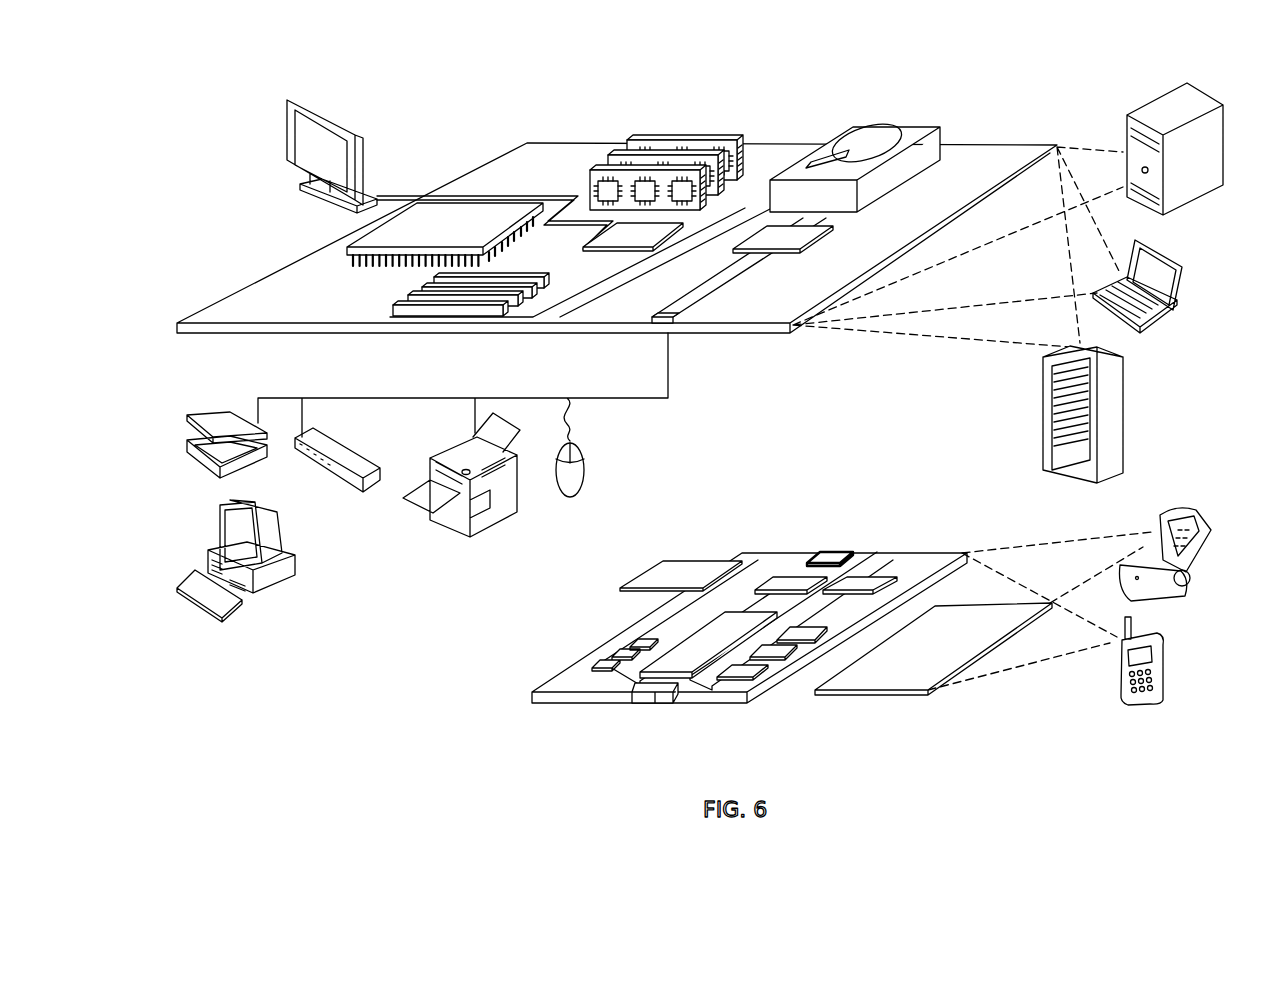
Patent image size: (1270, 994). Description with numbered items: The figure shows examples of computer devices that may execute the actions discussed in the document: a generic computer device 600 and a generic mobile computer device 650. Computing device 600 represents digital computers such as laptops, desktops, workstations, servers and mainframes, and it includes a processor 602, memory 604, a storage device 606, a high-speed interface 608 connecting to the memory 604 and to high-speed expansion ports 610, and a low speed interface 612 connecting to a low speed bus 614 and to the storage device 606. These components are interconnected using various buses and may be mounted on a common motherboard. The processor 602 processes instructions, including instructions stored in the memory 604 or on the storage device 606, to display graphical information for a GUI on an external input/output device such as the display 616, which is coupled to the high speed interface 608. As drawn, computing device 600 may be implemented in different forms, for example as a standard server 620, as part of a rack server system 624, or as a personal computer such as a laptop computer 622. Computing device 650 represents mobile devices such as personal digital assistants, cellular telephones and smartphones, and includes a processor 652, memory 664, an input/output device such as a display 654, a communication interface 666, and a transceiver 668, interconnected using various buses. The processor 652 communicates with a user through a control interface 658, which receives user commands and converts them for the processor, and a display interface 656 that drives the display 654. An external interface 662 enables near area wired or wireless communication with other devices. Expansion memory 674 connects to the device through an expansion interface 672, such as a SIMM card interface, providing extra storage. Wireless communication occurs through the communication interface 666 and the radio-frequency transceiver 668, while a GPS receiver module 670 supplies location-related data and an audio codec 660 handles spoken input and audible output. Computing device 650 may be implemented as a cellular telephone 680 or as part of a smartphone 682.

The computing device 600 is at (456, 121).
The processor 602 is at (318, 252).
The memory 604 is at (640, 140).
The storage device 606 is at (852, 126).
The high-speed interface 608 is at (607, 233).
The high-speed expansion ports 610 is at (403, 300).
The low speed interface 612 is at (767, 237).
The low speed bus 614 is at (681, 325).
The display 616 is at (287, 98).
The standard server 620 is at (1125, 131).
The laptop computer 622 is at (1187, 267).
The rack server system 624 is at (1043, 432).
The mobile computing device 650 is at (506, 706).
The processor 652 is at (686, 665).
The display 654 is at (895, 678).
The display interface 656 is at (752, 672).
The control interface 658 is at (783, 653).
The audio codec 660 is at (805, 633).
The external interface 662 is at (656, 703).
The memory 664 is at (617, 657).
The communication interface 666 is at (795, 580).
The transceiver 668 is at (862, 583).
The GPS receiver module 670 is at (840, 552).
The expansion interface 672 is at (718, 572).
The expansion memory 674 is at (662, 562).
The cellular telephone 680 is at (1165, 512).
The smartphone 682 is at (1115, 675).